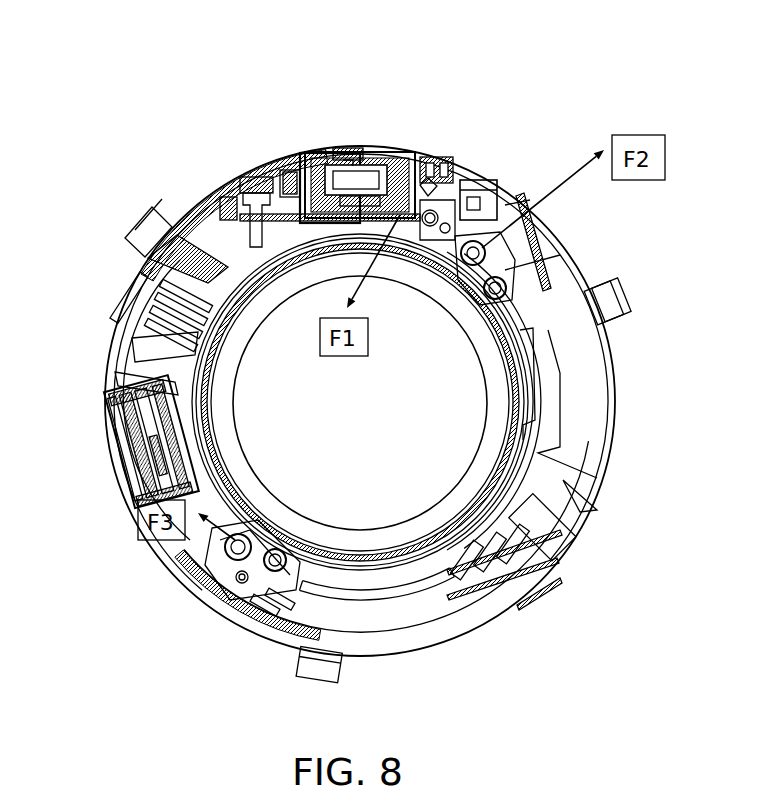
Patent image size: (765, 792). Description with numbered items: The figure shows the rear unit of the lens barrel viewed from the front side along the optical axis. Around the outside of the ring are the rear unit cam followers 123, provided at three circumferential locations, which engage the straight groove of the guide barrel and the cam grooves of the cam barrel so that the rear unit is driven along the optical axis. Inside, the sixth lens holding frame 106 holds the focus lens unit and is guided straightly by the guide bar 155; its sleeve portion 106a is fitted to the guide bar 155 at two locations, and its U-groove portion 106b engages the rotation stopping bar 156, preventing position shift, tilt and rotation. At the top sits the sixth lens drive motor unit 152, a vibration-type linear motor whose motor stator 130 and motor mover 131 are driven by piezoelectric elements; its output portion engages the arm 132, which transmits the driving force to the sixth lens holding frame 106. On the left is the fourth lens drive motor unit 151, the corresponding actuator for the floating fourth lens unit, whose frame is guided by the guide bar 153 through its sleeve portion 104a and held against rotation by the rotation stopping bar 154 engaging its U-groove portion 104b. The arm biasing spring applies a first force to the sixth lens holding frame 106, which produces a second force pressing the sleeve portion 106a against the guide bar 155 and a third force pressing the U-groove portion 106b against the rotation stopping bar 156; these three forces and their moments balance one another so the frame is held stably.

The sixth lens drive motor unit 152 is at (326, 91).
The motor stator 130 is at (335, 150).
The motor mover 131 is at (400, 152).
The arm 132 is at (400, 215).
The sixth lens holding frame 106 is at (470, 232).
The guide bar 155 is at (480, 240).
The sleeve portion 106a is at (490, 260).
The rear unit cam follower 123 is at (632, 302).
The rotation stopping bar 154 is at (560, 300).
The U-groove portion 104b is at (522, 340).
The fourth lens drive motor unit 151 is at (76, 464).
The sleeve portion 104a is at (220, 537).
The guide bar 153 is at (233, 548).
The rotation stopping bar 156 is at (222, 603).
The U-groove portion 106b is at (265, 608).